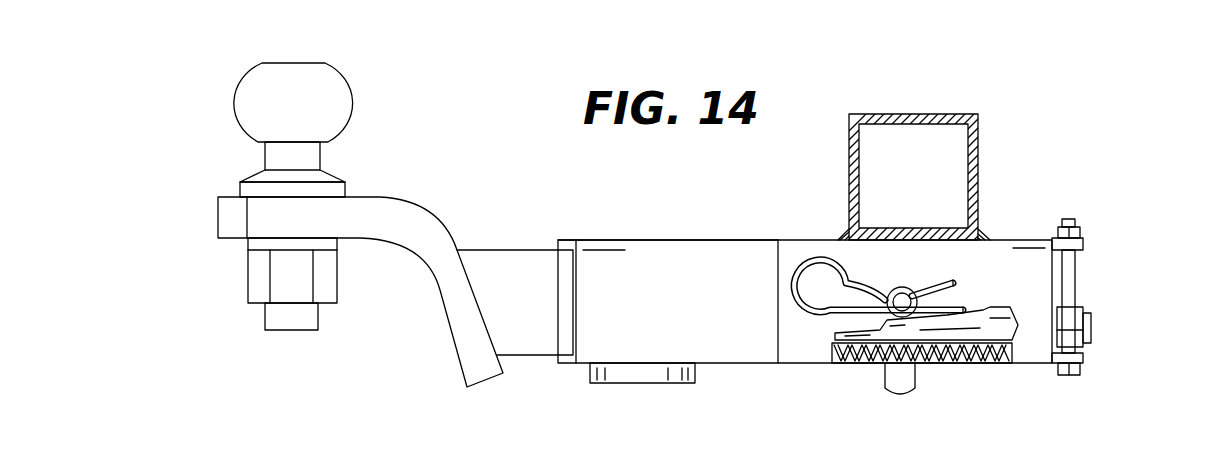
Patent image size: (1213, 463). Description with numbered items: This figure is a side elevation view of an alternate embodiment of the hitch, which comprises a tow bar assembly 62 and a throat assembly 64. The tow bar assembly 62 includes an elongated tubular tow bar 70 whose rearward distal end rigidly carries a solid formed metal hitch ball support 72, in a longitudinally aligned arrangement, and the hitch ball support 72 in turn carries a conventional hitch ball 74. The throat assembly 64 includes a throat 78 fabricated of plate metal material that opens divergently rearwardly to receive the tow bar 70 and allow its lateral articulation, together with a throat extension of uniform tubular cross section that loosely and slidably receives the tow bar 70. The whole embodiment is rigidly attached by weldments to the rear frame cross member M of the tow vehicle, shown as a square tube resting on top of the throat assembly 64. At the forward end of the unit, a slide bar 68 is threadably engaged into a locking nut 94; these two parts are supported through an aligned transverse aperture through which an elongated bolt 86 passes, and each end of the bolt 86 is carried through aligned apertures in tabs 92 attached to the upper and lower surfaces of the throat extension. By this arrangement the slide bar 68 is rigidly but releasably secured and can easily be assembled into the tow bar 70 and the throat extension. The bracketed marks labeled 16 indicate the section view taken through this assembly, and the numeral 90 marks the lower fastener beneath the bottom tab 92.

The hitch ball 74 is at (345, 95).
The hitch ball support 72 is at (381, 193).
The tow bar assembly 62 is at (443, 332).
The tow bar 70 is at (497, 250).
The section line 16- 16 is at (538, 250).
The throat assembly 64 is at (737, 236).
The throat 78 is at (672, 240).
The rear frame cross member M is at (925, 113).
The bolt 86 is at (1076, 280).
The tabs 92 is at (1084, 244).
The locking nut 94 is at (1070, 317).
The slide bar 68 is at (1092, 328).
The lower nut 90 is at (1084, 360).